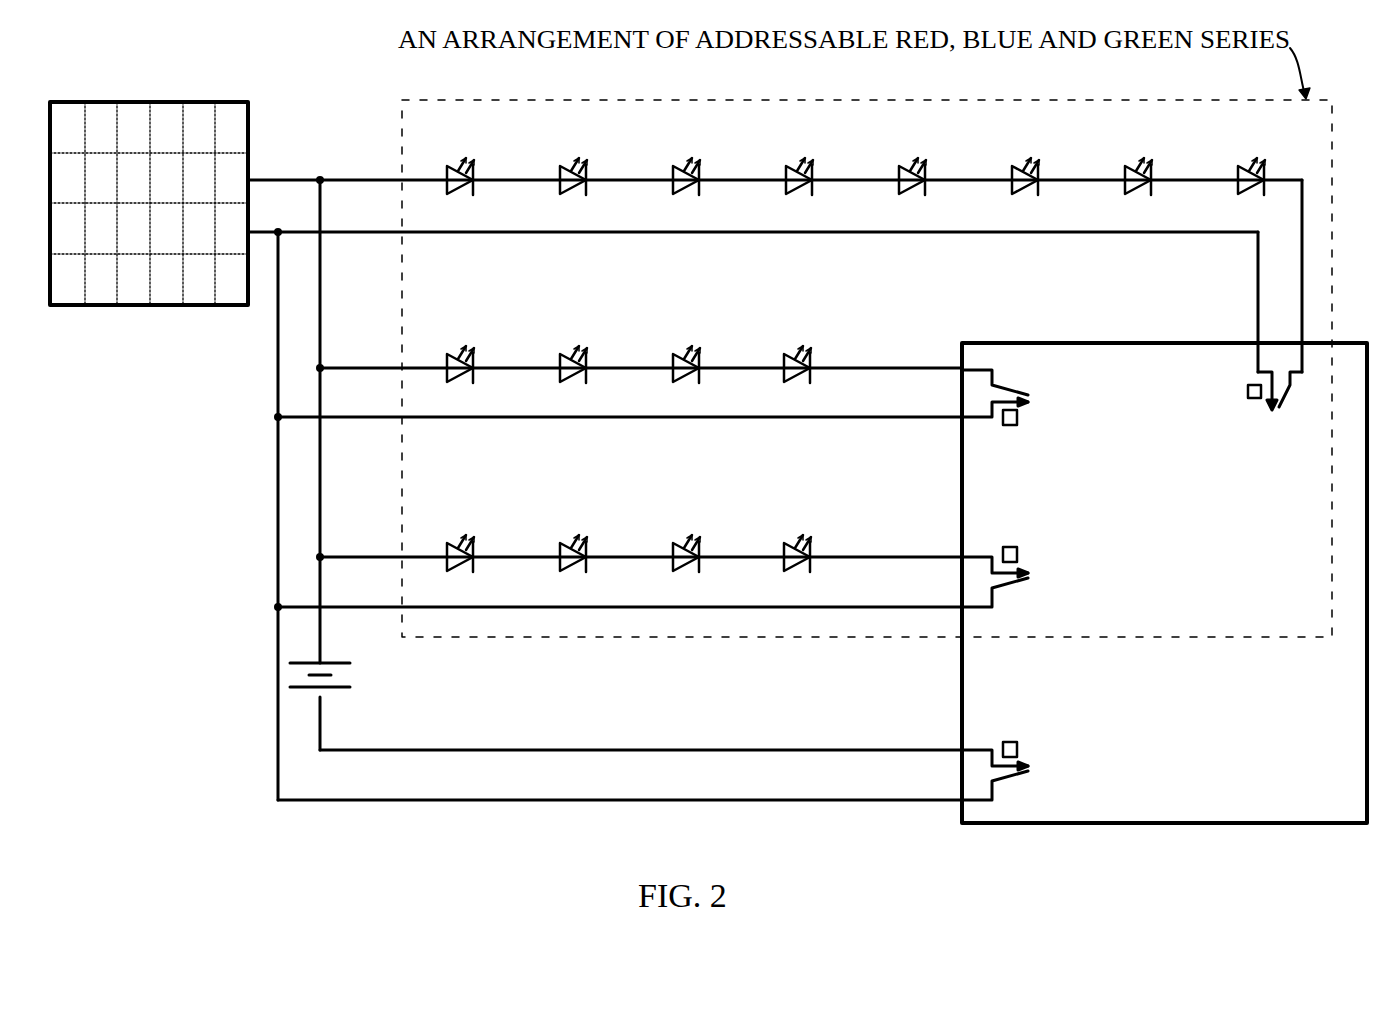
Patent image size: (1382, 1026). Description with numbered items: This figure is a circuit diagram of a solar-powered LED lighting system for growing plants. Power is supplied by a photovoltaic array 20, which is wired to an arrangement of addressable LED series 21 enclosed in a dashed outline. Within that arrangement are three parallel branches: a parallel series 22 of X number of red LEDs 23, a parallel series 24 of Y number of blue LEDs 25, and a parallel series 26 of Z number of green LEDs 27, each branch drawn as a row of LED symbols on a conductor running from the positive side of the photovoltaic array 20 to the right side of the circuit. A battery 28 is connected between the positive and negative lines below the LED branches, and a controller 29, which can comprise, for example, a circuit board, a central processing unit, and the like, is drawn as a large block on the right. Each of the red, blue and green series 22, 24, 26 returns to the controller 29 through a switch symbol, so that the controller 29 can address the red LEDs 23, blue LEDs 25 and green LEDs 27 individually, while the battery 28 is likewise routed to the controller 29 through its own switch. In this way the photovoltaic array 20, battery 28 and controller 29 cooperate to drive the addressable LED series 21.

The photovoltaic array 20 is at (172, 102).
The arrangement of addressable LED series 21 is at (402, 118).
The parallel series of red LEDs 22 is at (882, 150).
The red LED 23 is at (1012, 172).
The parallel series of blue LEDs 24 is at (713, 350).
The blue LED 25 is at (782, 372).
The parallel series of green LEDs 26 is at (684, 538).
The green LED 27 is at (782, 560).
The battery 28 is at (342, 688).
The controller 29 is at (975, 825).